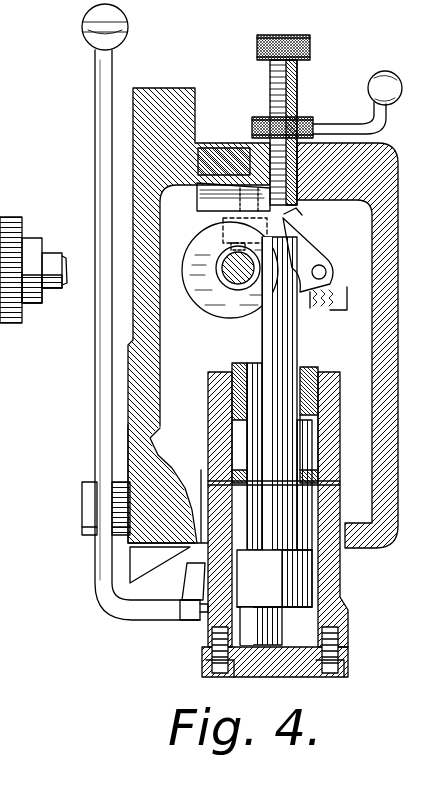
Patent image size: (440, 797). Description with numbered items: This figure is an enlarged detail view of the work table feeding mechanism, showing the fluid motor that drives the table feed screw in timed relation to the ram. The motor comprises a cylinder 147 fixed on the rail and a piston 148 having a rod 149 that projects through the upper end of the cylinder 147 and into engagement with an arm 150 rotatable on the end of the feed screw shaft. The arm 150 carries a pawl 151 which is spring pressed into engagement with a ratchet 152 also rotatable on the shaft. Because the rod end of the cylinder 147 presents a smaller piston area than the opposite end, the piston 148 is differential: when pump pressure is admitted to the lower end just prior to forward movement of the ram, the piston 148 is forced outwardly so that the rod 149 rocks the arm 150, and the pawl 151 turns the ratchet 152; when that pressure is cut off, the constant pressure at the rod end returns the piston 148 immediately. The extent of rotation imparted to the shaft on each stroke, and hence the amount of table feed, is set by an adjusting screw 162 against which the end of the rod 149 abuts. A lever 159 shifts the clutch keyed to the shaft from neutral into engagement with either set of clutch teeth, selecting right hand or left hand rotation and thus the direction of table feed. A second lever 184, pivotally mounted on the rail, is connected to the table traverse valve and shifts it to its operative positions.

The cylinder 147 is at (334, 580).
The piston 148 is at (258, 587).
The rod 149 is at (298, 346).
The arm 150 is at (307, 258).
The pawl 151 is at (296, 232).
The ratchet 152 is at (208, 320).
The lever 159 is at (370, 91).
The adjusting screw 162 is at (312, 47).
The lever 184 is at (97, 437).